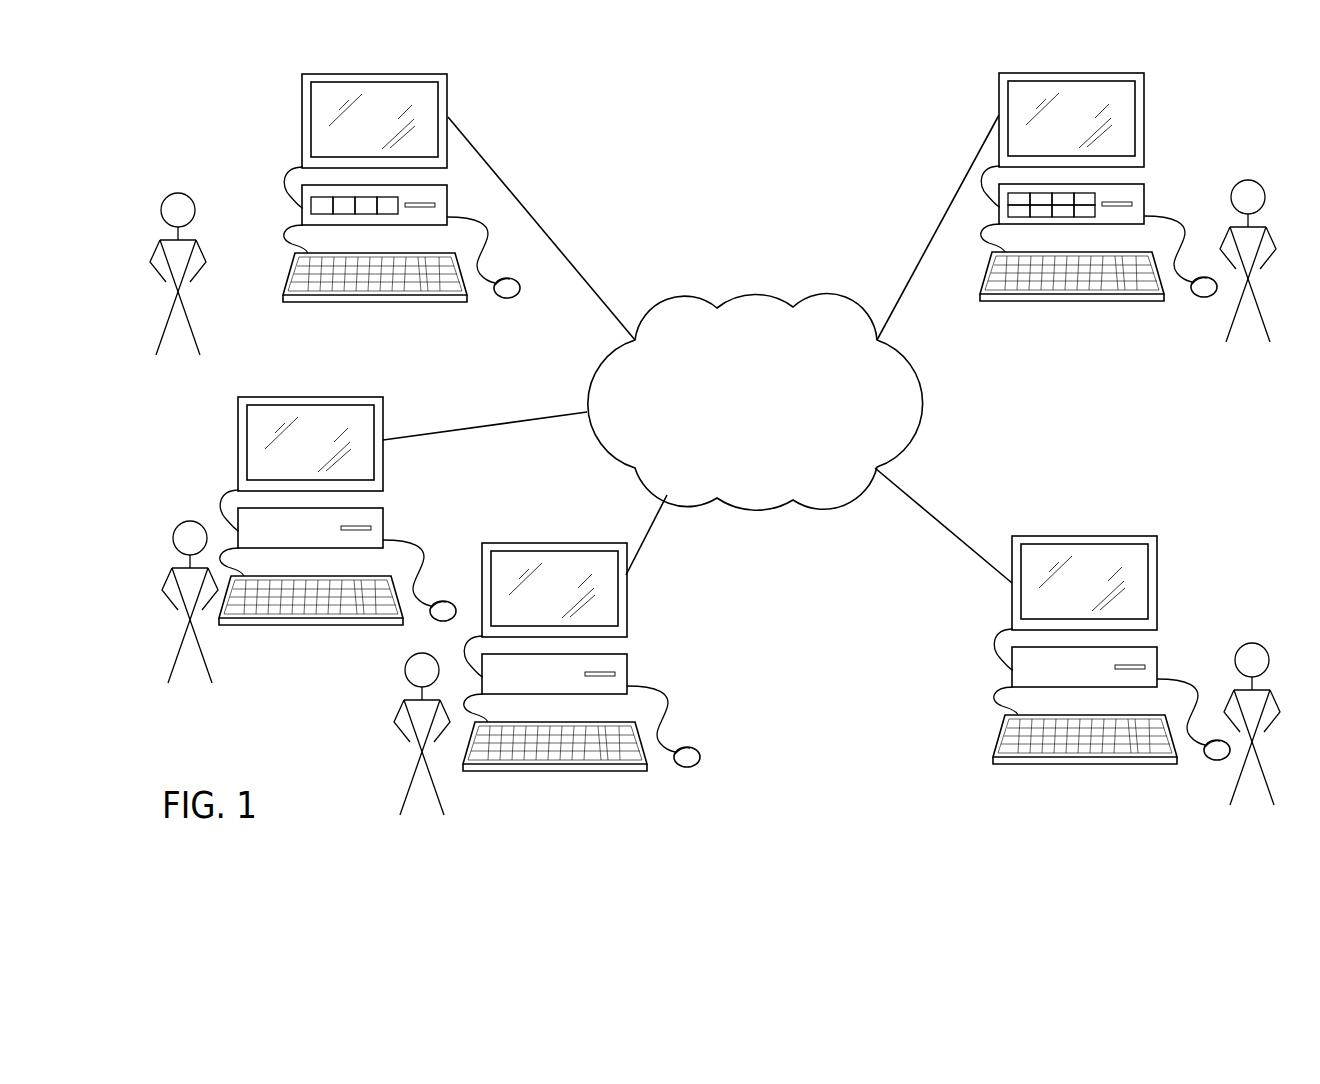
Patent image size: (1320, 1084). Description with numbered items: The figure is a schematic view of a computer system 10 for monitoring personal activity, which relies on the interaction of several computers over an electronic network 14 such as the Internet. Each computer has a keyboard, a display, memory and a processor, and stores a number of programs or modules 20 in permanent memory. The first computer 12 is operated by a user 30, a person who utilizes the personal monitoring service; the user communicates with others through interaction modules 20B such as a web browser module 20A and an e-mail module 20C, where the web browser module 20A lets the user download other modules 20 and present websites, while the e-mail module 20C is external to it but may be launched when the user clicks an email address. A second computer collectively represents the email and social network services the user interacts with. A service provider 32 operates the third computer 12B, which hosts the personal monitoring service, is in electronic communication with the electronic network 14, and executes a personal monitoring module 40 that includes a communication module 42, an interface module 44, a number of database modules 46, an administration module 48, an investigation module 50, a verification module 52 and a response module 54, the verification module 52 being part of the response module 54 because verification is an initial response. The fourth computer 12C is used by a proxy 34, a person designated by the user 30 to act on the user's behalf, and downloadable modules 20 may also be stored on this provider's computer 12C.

The system 10 is at (1185, 112).
The computer 12 is at (300, 103).
The third computer 12B is at (988, 113).
The fourth computer 12C is at (1047, 527).
The electronic network 14 is at (740, 421).
The module 20 is at (379, 210).
The web browser module 20A is at (274, 199).
The interaction module 20B is at (287, 220).
The e-mail module 20C is at (298, 234).
The user 30 is at (203, 302).
The service provider 32 is at (1223, 317).
The proxy 34 is at (1225, 780).
The personal monitoring module 40 is at (887, 185).
The communication module 42 is at (919, 184).
The interface module 44 is at (950, 184).
The database module 46 is at (981, 184).
The administration module 48 is at (887, 203).
The investigation module 50 is at (919, 203).
The verification module 52 is at (950, 203).
The response module 54 is at (981, 203).